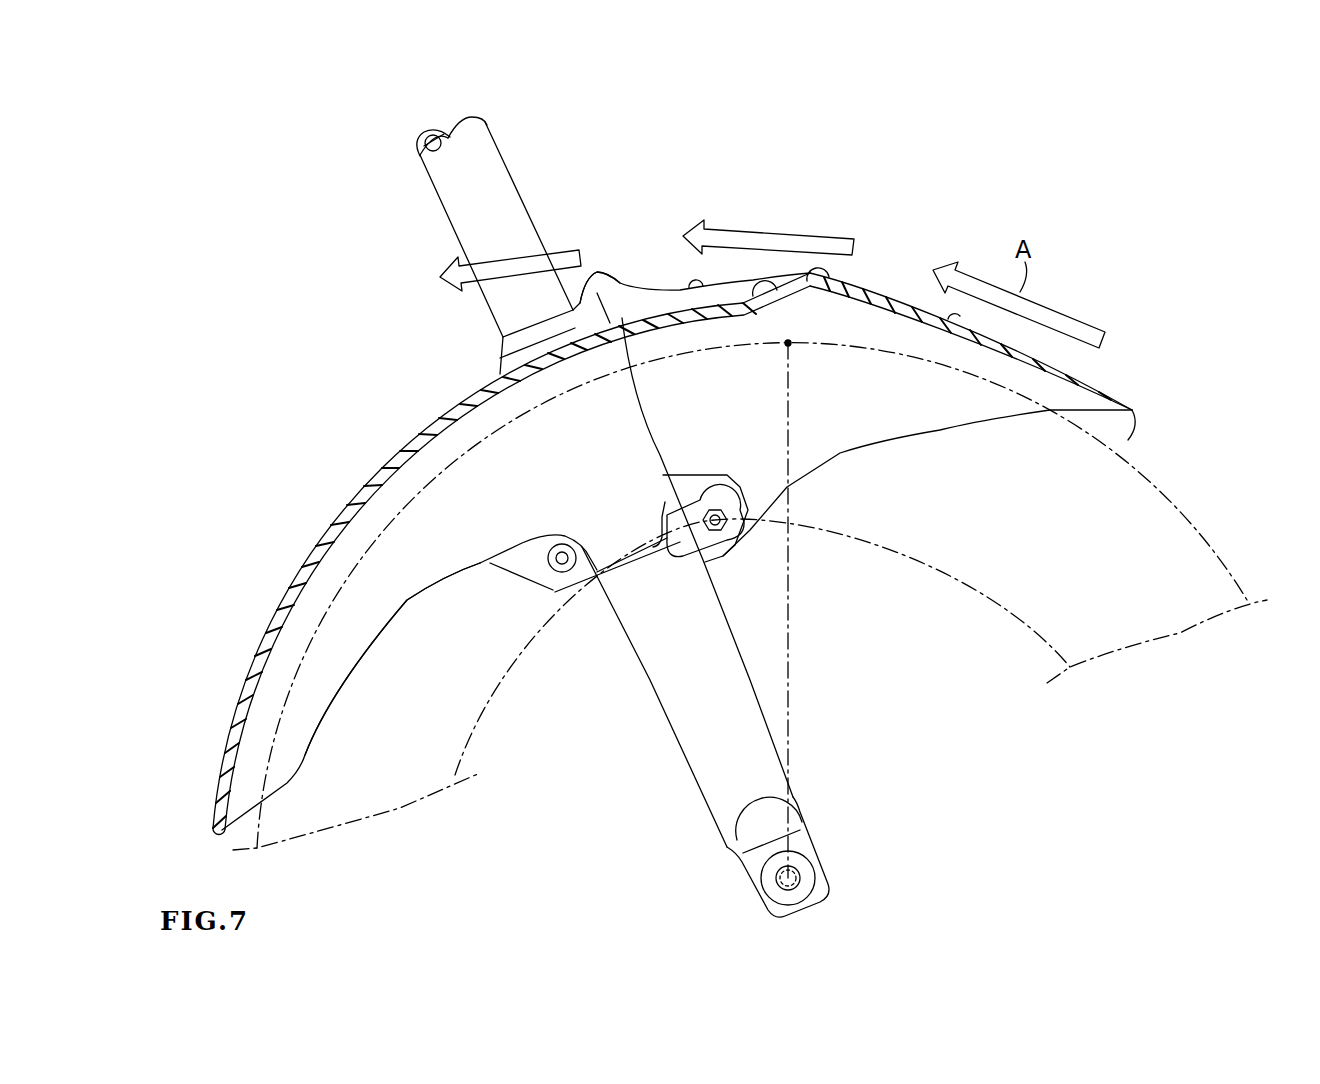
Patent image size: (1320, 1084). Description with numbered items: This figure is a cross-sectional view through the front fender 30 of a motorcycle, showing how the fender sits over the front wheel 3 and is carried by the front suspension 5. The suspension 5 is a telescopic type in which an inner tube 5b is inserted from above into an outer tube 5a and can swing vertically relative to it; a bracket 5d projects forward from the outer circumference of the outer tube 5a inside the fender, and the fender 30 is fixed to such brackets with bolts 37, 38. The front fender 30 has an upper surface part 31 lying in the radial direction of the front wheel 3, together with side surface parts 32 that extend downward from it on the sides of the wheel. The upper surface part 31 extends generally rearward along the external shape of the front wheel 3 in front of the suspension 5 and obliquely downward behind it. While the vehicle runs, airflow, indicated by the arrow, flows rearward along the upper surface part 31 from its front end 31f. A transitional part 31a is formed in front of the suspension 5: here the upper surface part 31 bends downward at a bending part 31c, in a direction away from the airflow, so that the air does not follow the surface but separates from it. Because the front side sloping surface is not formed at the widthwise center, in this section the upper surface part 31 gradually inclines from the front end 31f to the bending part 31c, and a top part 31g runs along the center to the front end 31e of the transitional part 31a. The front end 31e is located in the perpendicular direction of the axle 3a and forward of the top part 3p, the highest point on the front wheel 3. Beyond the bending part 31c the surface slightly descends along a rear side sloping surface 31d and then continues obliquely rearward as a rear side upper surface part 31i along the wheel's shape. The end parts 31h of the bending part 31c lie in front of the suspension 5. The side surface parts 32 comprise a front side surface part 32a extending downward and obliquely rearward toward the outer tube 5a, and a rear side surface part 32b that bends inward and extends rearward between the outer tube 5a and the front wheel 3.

The front wheel 3 is at (1195, 528).
The axle 3a is at (776, 878).
The top part 3p is at (778, 345).
The front suspension 5 is at (418, 180).
The outer tube 5a is at (685, 727).
The inner tube 5b is at (445, 213).
The bracket 5d is at (712, 505).
The front fender 30 is at (930, 190).
The upper surface part 31 is at (890, 272).
The transitional part 31a is at (795, 313).
The bending part 31c is at (692, 292).
The rear side sloping surface 31d is at (765, 300).
The front end of transitional part 31e is at (820, 286).
The front end 31f is at (1128, 440).
The top part 31g is at (952, 325).
The end parts 31h is at (598, 273).
The rear side upper surface part 31i is at (362, 480).
The side surface parts 32 is at (797, 493).
The front side surface part 32a is at (760, 500).
The rear side surface part 32b is at (450, 553).
The bolt 37 is at (720, 528).
The bolt 38 is at (563, 562).